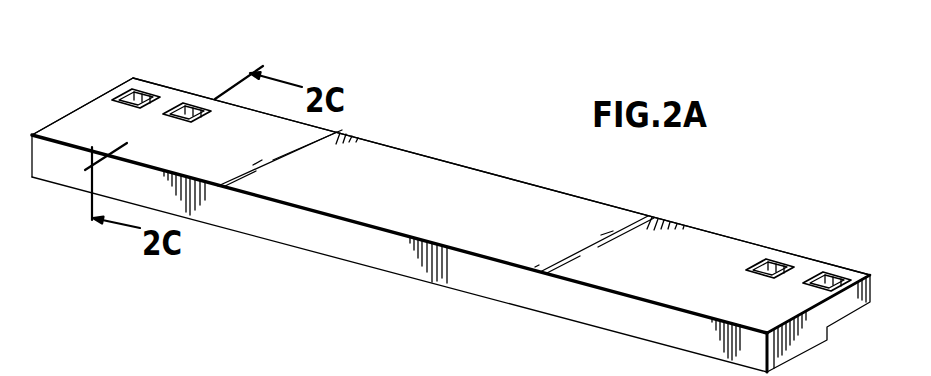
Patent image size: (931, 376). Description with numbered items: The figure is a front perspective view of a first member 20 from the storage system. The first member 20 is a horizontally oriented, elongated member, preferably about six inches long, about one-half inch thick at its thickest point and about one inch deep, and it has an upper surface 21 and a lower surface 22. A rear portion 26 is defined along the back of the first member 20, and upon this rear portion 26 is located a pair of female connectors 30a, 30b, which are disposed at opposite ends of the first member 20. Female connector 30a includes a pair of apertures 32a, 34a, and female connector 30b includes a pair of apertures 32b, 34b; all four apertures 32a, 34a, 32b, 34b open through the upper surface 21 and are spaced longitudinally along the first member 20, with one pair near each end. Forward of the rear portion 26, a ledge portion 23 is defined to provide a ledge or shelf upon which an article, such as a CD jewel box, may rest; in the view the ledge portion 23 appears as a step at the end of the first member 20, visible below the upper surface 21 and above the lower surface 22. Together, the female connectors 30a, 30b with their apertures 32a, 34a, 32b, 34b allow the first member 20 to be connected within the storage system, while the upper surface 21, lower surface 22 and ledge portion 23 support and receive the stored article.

The first member 20 is at (504, 171).
The upper surface 21 is at (346, 198).
The lower surface 22 is at (467, 292).
The ledge portion 23 is at (802, 346).
The rear portion 26 is at (440, 158).
The female connector 30a is at (131, 68).
The female connector 30b is at (821, 240).
The aperture 32a is at (118, 98).
The aperture 32b is at (809, 284).
The aperture 34a is at (174, 116).
The aperture 34b is at (763, 260).